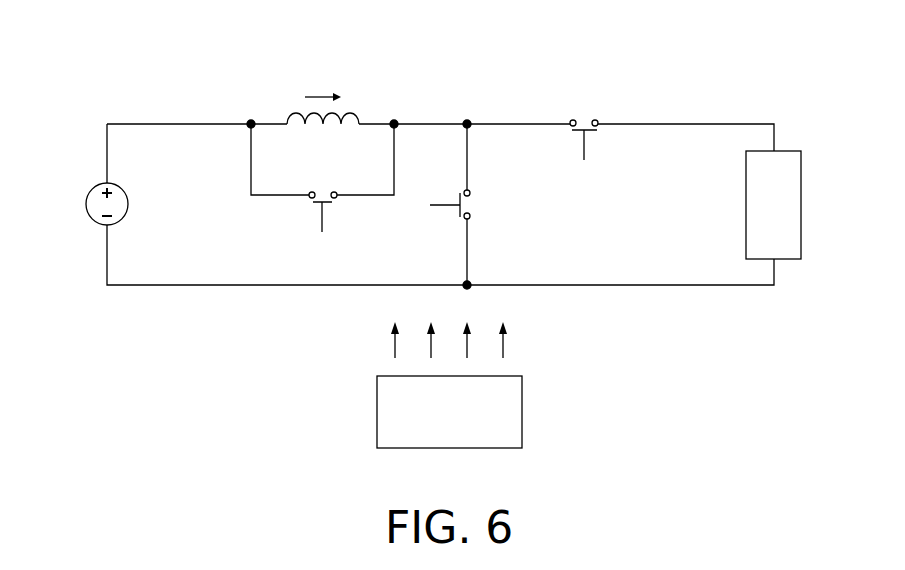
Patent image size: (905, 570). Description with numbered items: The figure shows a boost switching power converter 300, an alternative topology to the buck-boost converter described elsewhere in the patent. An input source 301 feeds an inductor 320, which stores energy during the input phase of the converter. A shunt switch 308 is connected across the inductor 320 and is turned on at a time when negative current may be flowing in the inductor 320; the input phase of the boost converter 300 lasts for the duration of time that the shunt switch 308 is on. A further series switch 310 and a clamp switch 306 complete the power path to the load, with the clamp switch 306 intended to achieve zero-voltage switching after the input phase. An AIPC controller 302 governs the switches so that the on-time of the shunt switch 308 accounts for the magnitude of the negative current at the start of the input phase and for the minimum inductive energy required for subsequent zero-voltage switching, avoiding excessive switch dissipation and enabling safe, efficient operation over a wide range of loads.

The boost converter 300 is at (211, 60).
The input voltage source 301 is at (98, 190).
The AIPC controller 302 is at (503, 376).
The clamp switch S10 306 is at (591, 133).
The switch S11 308 is at (317, 204).
The switch S9 310 is at (459, 201).
The inductor 320 is at (297, 118).